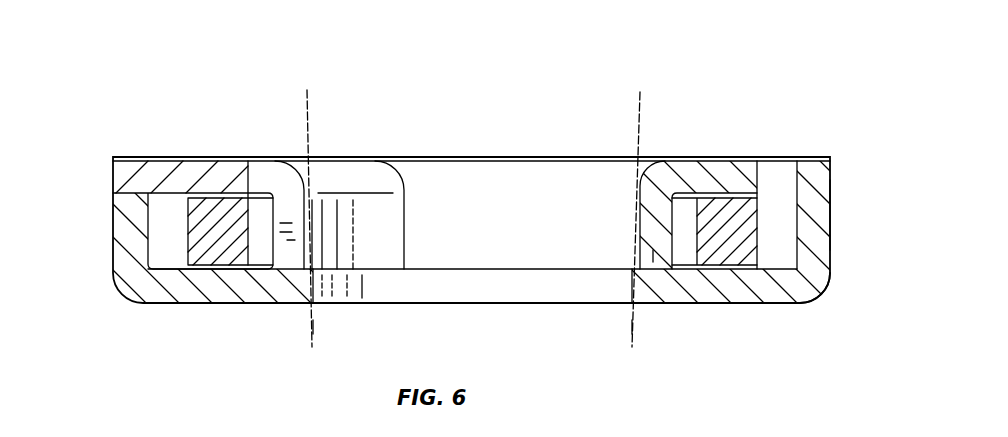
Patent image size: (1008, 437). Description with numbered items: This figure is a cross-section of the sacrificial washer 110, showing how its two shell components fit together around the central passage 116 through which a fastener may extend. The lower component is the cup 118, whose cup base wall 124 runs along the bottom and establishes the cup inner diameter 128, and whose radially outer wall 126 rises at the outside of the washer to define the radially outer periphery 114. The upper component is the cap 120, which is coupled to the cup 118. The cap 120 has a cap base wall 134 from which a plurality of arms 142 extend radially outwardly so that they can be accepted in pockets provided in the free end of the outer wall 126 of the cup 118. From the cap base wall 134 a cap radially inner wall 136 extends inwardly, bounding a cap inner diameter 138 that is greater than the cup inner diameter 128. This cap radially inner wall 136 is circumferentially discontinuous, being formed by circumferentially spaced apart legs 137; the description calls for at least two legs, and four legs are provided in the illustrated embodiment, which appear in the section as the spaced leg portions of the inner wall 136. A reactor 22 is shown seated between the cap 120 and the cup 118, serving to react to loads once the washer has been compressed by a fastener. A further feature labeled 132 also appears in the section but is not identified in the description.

The washer 110 is at (763, 58).
The radially outer periphery 114 is at (835, 213).
The passage 116 is at (502, 263).
The cup 118 is at (821, 310).
The cap 120 is at (221, 156).
The cup base wall 124 is at (765, 293).
The radially outer wall 126 is at (813, 172).
The cup inner diameter 128 is at (630, 327).
The retainer 132 is at (628, 283).
The cap base wall 134 is at (707, 173).
The cap radially inner wall 136 is at (635, 210).
The legs 137 is at (291, 250).
The cap inner diameter 138 is at (638, 109).
The arms 142 is at (129, 167).
The reactor 22 is at (200, 262).